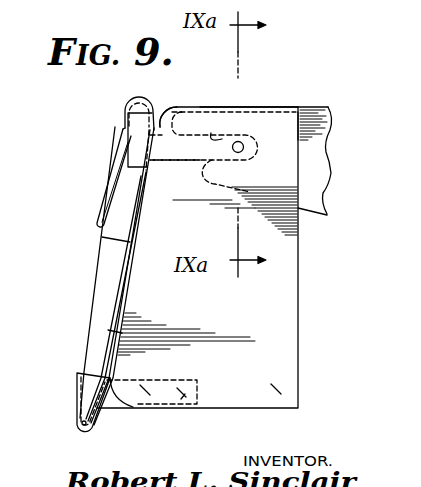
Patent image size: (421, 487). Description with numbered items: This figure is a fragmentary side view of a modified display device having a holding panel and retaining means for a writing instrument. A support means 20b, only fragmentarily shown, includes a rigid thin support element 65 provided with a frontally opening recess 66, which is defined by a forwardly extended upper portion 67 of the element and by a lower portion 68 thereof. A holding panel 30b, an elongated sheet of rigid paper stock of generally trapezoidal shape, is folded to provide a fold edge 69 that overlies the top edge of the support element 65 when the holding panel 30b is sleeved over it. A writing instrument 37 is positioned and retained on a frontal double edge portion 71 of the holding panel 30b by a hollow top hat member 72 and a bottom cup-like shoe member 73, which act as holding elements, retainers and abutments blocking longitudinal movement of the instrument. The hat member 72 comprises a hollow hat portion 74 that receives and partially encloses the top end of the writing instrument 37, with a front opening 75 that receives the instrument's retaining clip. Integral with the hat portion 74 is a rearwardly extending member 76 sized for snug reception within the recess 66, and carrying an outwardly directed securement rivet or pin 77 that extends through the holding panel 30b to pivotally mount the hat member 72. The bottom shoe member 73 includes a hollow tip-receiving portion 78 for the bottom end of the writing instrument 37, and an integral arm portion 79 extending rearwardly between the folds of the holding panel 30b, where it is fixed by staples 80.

The support means 20b is at (336, 110).
The holding panel 30b is at (306, 315).
The writing instrument 37 is at (100, 257).
The support element 65 is at (308, 107).
The recess 66 is at (213, 135).
The upper portion 67 is at (190, 107).
The lower portion 68 is at (221, 190).
The fold edge 69 is at (255, 104).
The frontal double edge portion 71 is at (120, 333).
The hat member 72 is at (118, 114).
The shoe member 73 is at (70, 402).
The hat portion 74 is at (163, 103).
The front opening 75 is at (125, 139).
The rearwardly extending member 76 is at (177, 163).
The securement rivet or pin 77 is at (245, 142).
The tip-receiving portion 78 is at (76, 380).
The arm portion 79 is at (158, 380).
The staples 80 is at (183, 392).